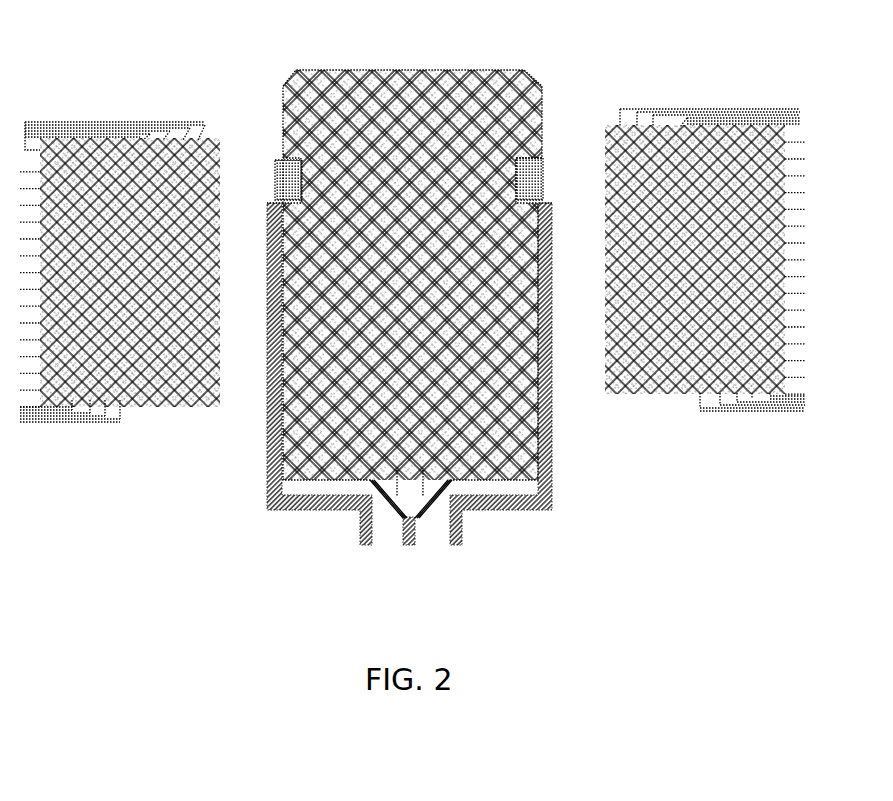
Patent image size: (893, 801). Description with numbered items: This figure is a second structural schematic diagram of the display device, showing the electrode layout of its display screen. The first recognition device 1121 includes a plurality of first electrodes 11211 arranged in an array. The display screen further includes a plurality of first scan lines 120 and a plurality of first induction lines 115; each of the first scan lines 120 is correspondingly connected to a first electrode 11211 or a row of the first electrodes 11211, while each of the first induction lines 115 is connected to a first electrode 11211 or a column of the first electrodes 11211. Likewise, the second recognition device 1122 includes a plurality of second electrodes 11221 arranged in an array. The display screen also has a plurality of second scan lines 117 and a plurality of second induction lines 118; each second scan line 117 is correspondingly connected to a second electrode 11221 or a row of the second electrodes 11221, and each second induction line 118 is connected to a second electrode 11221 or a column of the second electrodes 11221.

The first recognition device 1121 is at (248, 182).
The second recognition device 1122 is at (318, 48).
The second electrode 11221 is at (470, 73).
The first induction line 115 is at (23, 150).
The first electrode 11211 is at (762, 110).
The second scan line 117 is at (270, 434).
The second induction line 118 is at (415, 543).
The first scan line 120 is at (80, 418).